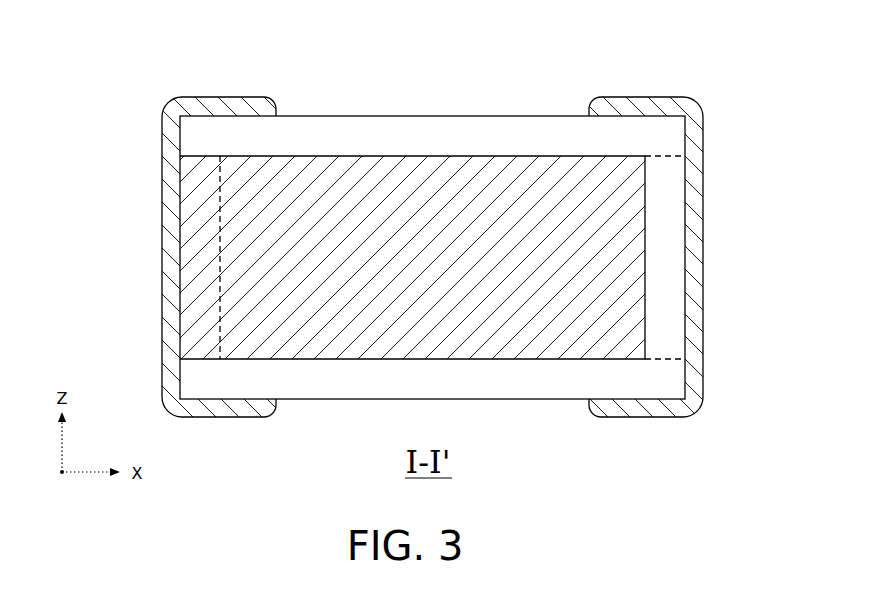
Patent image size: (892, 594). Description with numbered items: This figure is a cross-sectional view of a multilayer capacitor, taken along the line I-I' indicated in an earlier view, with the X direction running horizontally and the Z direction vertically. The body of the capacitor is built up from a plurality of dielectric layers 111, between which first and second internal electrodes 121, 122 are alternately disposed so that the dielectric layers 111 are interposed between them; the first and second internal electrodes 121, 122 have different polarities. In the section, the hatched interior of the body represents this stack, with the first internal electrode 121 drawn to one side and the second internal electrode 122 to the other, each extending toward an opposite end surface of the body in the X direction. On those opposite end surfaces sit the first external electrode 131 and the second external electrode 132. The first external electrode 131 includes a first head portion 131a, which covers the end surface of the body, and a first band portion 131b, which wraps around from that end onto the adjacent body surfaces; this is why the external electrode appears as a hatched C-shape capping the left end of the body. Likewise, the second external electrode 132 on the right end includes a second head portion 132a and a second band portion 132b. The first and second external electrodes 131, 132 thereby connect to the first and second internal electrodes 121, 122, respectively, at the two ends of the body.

The dielectric layer 111 is at (450, 138).
The first internal electrode 121 is at (356, 193).
The second internal electrode 122 is at (655, 193).
The first external electrode 131 is at (292, 247).
The first head portion 131a is at (78, 80).
The first band portion 131b is at (207, 97).
The second external electrode 132 is at (579, 247).
The second head portion 132a is at (786, 80).
The second band portion 132b is at (658, 97).